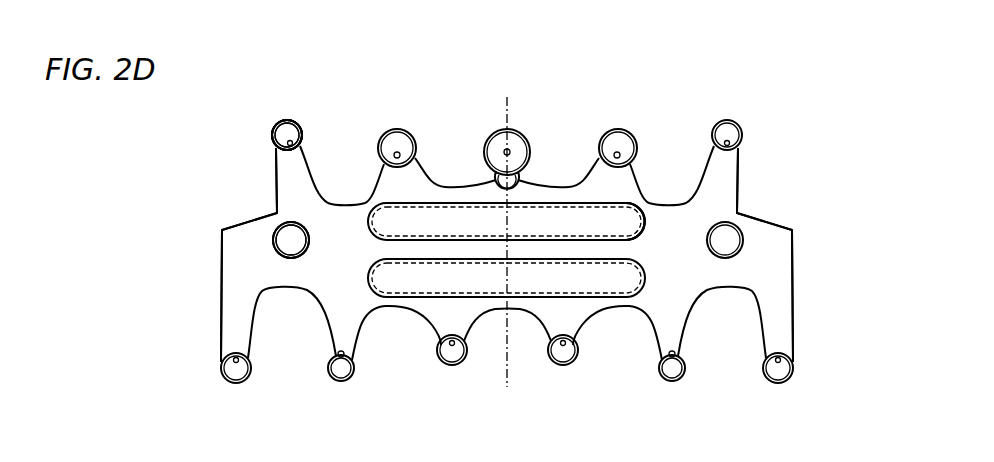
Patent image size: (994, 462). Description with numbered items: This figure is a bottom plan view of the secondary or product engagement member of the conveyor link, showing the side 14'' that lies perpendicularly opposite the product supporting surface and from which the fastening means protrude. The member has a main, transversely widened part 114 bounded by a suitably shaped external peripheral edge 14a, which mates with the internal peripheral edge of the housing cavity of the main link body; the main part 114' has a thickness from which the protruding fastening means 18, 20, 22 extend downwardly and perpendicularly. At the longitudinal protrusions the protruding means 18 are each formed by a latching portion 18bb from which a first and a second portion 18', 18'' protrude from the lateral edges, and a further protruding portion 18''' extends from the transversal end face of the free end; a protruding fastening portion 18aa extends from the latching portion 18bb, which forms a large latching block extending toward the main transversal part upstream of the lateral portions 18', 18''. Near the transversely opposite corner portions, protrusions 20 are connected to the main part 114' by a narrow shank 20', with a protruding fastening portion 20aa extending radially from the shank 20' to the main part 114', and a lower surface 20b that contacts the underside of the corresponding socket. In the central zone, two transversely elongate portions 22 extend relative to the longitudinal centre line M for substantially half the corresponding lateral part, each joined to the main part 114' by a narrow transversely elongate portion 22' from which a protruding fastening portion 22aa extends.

The main transversely widened part 114 is at (430, 258).
The main part 114' is at (787, 156).
The external peripheral edge 14a is at (216, 298).
The lower face 14'' is at (819, 296).
The protruding fastening means 18 is at (494, 239).
The first portion 18' is at (246, 134).
The second portion 18'' is at (328, 104).
The protruding portion 18''' is at (272, 100).
The protruding fastening portion 18aa is at (293, 112).
The latching portion 18bb is at (304, 136).
The protrusion 20 is at (540, 214).
The narrow shank 20' is at (228, 224).
The protruding fastening portion 20aa is at (277, 214).
The lower surface 20b is at (272, 252).
The transversely elongate portion 22 is at (506, 241).
The narrow transversely elongate portion 22' is at (643, 150).
The protruding fastening portion 22aa is at (658, 218).
The longitudinal centre line M is at (509, 105).